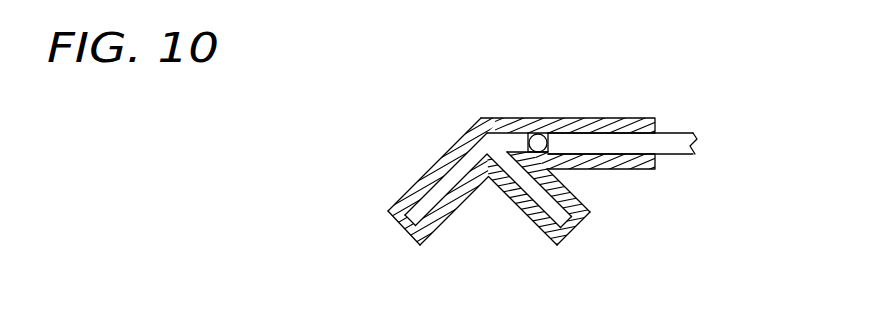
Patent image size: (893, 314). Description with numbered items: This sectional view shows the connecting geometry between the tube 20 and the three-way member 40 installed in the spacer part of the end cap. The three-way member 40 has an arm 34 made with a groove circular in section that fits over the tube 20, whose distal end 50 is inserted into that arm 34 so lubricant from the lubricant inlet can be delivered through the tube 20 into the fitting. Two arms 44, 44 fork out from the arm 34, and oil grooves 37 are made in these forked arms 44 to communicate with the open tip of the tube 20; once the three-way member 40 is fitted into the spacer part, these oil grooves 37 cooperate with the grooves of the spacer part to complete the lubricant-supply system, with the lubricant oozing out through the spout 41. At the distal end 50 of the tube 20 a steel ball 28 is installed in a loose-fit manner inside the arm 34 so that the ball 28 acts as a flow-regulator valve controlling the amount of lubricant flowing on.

The tube 20 is at (674, 139).
The steel ball 28 is at (538, 143).
The arm 34 is at (627, 128).
The oil groove 37 is at (448, 183).
The three-way member 40 is at (601, 112).
The spout 41 is at (406, 230).
The forked arm 44 is at (442, 220).
The distal end 50 is at (633, 150).